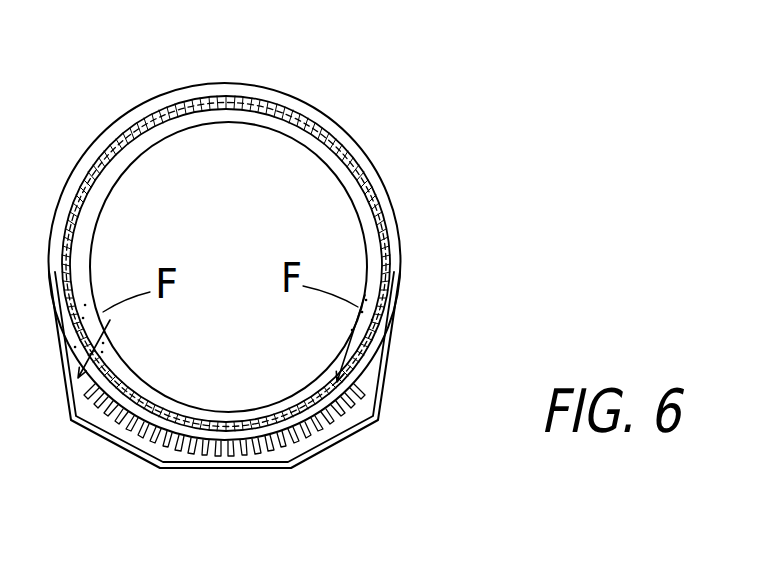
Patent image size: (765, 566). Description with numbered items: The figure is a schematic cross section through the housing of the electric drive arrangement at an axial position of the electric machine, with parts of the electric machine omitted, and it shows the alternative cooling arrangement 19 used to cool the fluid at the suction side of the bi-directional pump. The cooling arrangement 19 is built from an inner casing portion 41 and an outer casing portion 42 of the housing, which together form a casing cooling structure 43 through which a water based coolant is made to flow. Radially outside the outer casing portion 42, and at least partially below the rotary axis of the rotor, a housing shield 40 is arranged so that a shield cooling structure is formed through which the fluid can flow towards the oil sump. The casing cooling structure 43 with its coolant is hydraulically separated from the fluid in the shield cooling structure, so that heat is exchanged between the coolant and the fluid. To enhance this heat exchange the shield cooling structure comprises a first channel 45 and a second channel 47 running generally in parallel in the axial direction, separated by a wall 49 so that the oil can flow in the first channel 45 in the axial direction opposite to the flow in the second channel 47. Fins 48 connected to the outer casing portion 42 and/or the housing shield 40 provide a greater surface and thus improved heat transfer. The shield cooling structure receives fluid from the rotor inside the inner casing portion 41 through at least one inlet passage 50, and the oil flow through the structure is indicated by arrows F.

The cooling arrangement 19 is at (485, 152).
The housing shield 40 is at (352, 437).
The inner casing portion 41 is at (183, 123).
The outer casing portion 42 is at (320, 105).
The casing cooling structure 43 is at (258, 103).
The first channel 45 is at (137, 445).
The second channel 47 is at (367, 407).
The fins 48 is at (105, 430).
The wall 49 is at (222, 458).
The inlet passage 50 is at (92, 295).